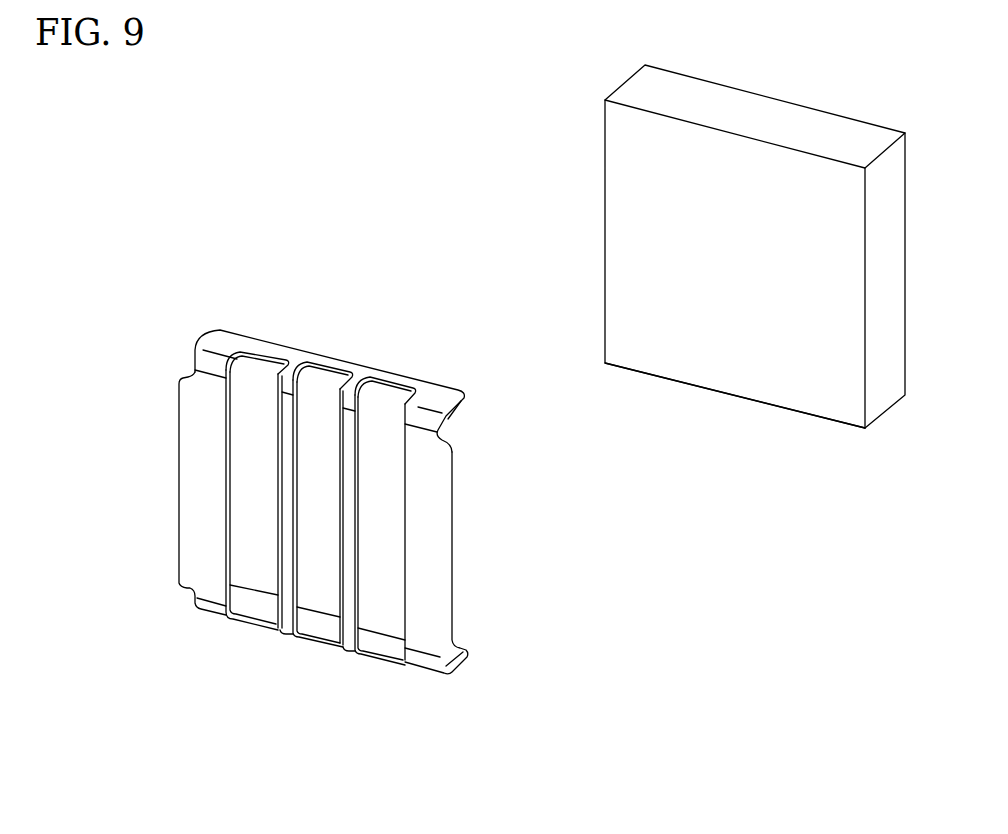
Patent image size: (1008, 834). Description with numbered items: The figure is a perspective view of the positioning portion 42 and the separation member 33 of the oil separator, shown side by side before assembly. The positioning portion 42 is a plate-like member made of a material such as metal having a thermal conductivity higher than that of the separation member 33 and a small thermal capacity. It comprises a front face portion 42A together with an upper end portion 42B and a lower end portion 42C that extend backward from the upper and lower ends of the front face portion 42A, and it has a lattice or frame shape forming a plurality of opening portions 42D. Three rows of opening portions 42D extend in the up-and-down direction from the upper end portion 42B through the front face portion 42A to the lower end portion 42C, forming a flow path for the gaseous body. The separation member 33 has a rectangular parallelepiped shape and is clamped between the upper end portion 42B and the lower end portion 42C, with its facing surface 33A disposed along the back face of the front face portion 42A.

The positioning portion 42 is at (268, 306).
The front face portion 42A is at (212, 428).
The upper end portion 42B is at (357, 360).
The lower end portion 42C is at (380, 632).
The opening portions 42D is at (232, 493).
The separation member 33 is at (806, 433).
The facing surface 33A is at (732, 353).